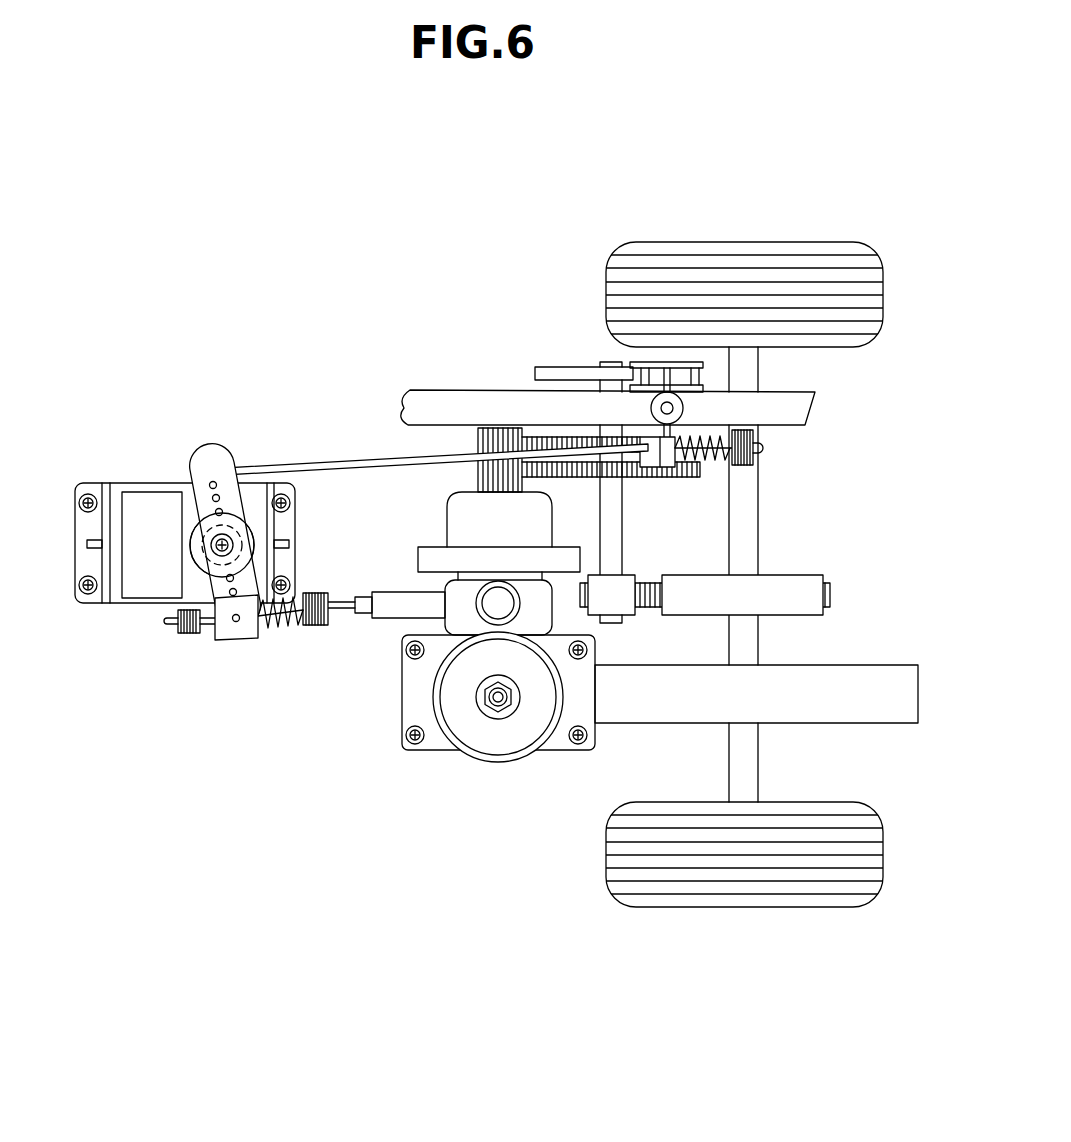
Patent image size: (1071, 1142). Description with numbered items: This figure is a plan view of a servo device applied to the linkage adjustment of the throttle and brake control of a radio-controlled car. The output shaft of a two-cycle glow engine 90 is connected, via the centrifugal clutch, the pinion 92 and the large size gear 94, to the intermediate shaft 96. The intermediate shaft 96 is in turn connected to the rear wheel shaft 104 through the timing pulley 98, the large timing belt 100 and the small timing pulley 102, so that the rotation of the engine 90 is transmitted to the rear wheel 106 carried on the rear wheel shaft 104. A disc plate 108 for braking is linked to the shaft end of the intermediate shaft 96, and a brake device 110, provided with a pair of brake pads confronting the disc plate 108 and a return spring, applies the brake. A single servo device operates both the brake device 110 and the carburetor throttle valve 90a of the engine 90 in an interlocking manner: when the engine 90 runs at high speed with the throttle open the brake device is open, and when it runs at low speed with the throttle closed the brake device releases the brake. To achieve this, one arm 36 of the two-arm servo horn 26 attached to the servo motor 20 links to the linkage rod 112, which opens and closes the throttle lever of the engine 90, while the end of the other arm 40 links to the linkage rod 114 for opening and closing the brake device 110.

The servo motor 20 is at (138, 500).
The servo horn 26 is at (178, 553).
The arm 36 is at (222, 588).
The arm 40 is at (210, 463).
The two-cycle glow engine 90 is at (495, 740).
The carburetor throttle valve 90a is at (362, 618).
The pinion 92 is at (468, 478).
The large size gear 94 is at (655, 468).
The intermediate shaft 96 is at (620, 540).
The timing pulley 98 is at (792, 582).
The large timing belt 100 is at (640, 614).
The small timing pulley 102 is at (825, 614).
The rear wheel shaft 104 is at (752, 760).
The rear wheel 106 is at (762, 240).
The disc plate 108 is at (545, 366).
The brake device 110 is at (700, 378).
The linkage rod 112 is at (280, 626).
The linkage rod 114 is at (318, 460).